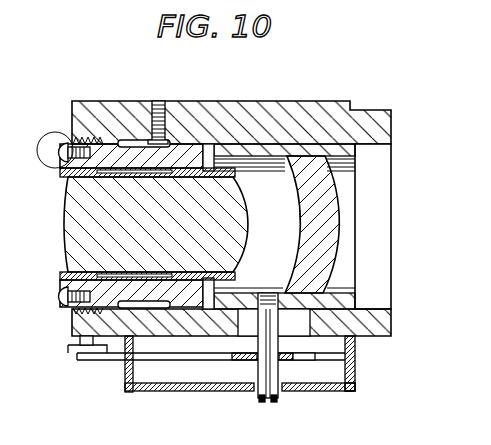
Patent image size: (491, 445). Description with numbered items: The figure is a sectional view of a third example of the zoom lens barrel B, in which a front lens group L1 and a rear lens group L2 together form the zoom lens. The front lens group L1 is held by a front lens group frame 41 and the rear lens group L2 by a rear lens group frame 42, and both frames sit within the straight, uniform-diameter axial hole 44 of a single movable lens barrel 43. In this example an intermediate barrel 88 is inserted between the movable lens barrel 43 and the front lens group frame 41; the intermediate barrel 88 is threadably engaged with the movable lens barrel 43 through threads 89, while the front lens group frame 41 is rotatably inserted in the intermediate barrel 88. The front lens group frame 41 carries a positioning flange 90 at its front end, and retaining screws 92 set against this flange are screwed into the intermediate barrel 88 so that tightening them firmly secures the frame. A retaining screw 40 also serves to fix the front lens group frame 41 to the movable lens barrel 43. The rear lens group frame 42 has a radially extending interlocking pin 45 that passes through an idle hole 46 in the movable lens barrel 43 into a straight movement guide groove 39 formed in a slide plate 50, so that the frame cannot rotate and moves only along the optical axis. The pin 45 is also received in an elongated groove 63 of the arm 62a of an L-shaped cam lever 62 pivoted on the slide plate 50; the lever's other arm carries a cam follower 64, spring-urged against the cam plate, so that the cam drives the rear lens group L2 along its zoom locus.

The threads 89 is at (88, 136).
The intermediate barrel 88 is at (96, 144).
The retaining screw 40 is at (155, 101).
The movable lens barrel 43 is at (233, 113).
The retaining screws 92 is at (50, 133).
The rear lens group frame 42 is at (348, 152).
The front lens group frame 41 is at (113, 177).
The front lens group L1 is at (70, 224).
The rear lens group L2 is at (332, 220).
The positioning flange 90 is at (63, 270).
The axial hole 44 is at (378, 312).
The cam follower 64 is at (68, 346).
The cam lever 62 is at (168, 362).
The elongated groove 63 is at (256, 362).
The arm 62a is at (288, 367).
The straight movement guide groove 39 is at (293, 392).
The interlocking pin 45 is at (274, 380).
The idle hole 46 is at (355, 360).
The slide plate 50 is at (345, 393).
The zoom lens barrel B is at (416, 101).